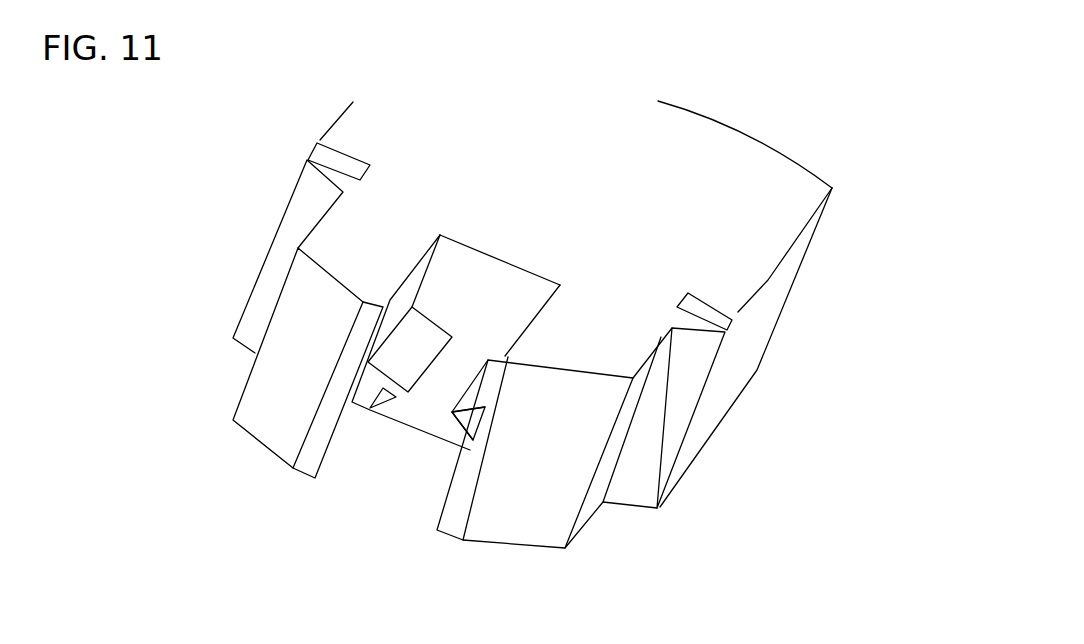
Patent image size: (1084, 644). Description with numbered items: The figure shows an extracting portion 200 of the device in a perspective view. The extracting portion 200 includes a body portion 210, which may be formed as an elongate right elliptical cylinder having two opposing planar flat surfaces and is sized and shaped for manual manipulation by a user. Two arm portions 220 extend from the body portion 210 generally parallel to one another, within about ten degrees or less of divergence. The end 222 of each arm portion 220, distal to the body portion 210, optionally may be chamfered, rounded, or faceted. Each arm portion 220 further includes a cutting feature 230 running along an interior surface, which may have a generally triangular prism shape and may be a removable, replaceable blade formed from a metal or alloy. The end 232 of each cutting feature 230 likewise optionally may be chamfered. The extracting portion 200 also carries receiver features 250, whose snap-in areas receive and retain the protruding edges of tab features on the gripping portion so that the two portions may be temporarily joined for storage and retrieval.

The extracting portion 200 is at (866, 112).
The body portion 210 is at (680, 147).
The arm portions 220 is at (479, 274).
The end 222 is at (268, 420).
The cutting feature 230 is at (476, 366).
The end 232 is at (405, 495).
The receiver feature 250 is at (342, 158).